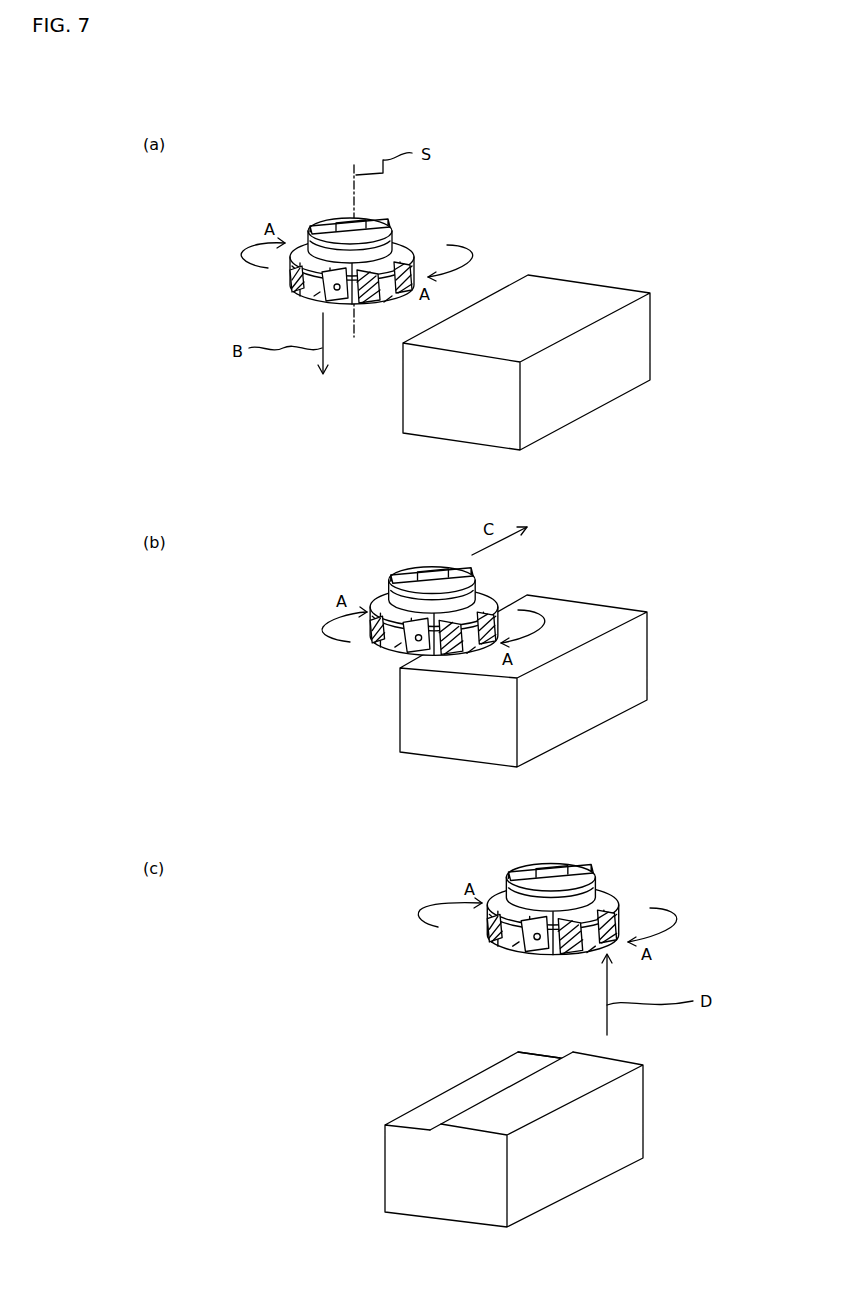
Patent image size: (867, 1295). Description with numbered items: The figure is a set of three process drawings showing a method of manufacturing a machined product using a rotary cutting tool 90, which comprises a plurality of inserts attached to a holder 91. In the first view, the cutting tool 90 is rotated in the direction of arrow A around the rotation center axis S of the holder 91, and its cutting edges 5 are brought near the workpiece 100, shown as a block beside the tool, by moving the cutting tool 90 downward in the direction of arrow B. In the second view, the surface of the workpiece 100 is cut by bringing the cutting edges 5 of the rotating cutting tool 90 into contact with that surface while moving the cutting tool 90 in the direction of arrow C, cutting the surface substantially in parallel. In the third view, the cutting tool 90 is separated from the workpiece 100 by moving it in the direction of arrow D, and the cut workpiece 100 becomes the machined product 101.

The cutting edge 5 is at (363, 304).
The cutting tool 90 is at (407, 212).
The holder 91 is at (322, 221).
The workpiece 100 is at (622, 353).
The machined product 101 is at (617, 1140).